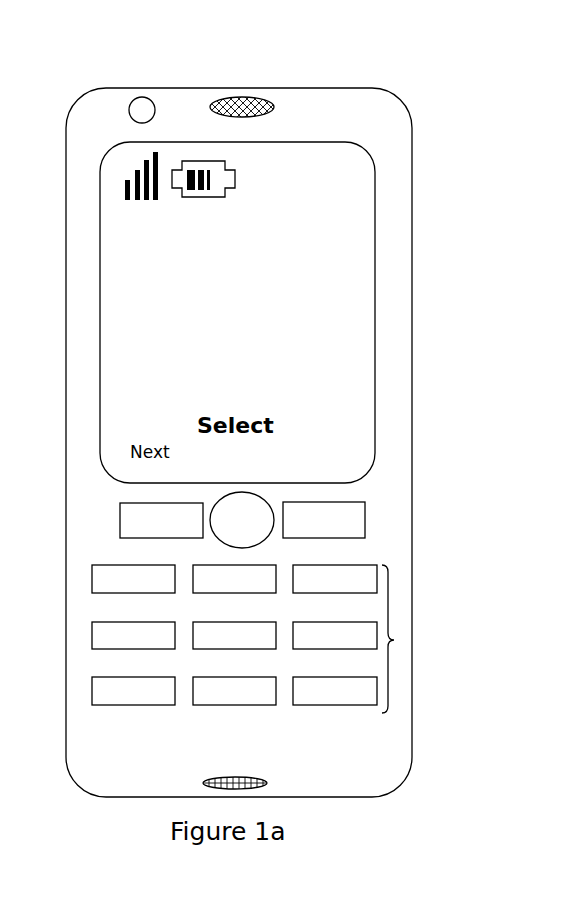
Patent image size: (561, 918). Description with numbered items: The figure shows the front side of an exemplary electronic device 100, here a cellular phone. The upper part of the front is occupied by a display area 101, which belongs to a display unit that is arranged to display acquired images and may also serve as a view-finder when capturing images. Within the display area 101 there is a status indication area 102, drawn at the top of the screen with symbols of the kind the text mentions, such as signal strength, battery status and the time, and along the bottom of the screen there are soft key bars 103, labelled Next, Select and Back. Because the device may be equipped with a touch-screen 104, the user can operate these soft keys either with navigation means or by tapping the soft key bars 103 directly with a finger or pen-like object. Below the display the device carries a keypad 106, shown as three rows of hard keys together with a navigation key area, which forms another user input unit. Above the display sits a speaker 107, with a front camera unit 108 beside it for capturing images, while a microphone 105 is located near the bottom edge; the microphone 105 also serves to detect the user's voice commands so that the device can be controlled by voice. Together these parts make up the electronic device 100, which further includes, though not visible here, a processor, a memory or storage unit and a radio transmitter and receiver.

The electronic device 100 is at (412, 555).
The display area 101 is at (355, 198).
The status indication area 102 is at (255, 199).
The soft key bar 103 is at (320, 428).
The touch-screen 104 is at (377, 437).
The microphone 105 is at (268, 786).
The keypad 106 is at (394, 640).
The speaker 107 is at (275, 104).
The front camera unit 108 is at (148, 98).